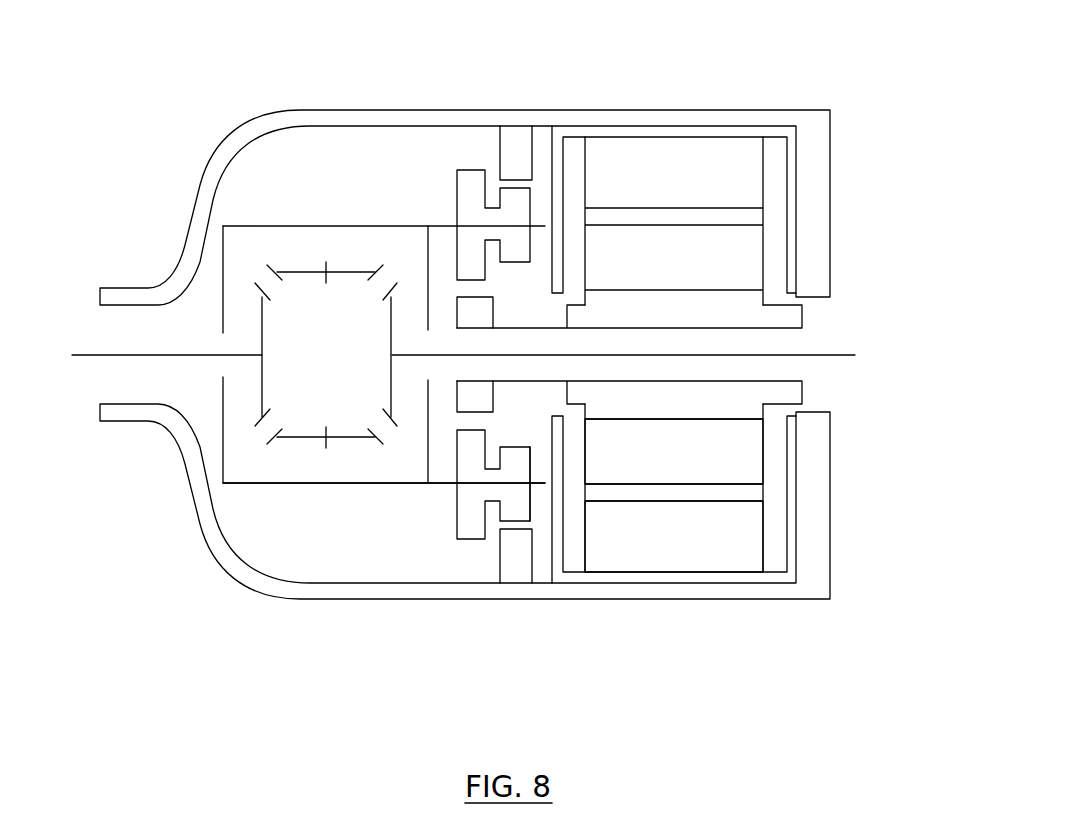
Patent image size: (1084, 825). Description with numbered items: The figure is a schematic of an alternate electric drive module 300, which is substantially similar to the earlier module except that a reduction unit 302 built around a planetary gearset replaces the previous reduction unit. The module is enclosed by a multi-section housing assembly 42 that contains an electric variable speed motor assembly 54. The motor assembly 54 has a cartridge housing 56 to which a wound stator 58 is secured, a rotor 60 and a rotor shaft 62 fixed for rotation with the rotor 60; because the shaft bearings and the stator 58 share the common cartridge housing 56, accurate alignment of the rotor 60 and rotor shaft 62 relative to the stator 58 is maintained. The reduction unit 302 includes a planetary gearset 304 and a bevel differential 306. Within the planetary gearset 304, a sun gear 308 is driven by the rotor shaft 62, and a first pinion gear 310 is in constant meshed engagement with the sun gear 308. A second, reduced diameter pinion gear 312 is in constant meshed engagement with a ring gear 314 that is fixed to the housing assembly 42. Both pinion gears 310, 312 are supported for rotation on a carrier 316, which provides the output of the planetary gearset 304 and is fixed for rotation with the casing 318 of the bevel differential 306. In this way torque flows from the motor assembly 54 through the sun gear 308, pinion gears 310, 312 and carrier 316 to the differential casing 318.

The electric drive module 300 is at (827, 76).
The reduction unit 302 is at (292, 148).
The planetary gearset 304 is at (462, 164).
The bevel differential 306 is at (338, 350).
The sun gear 308 is at (479, 401).
The first pinion gear 310 is at (473, 520).
The second pinion gear 312 is at (523, 510).
The ring gear 314 is at (508, 572).
The carrier 316 is at (471, 223).
The casing 318 is at (292, 485).
The housing assembly 42 is at (310, 592).
The motor assembly 54 is at (674, 316).
The cartridge housing 56 is at (611, 130).
The wound stator 58 is at (691, 548).
The rotor 60 is at (691, 462).
The rotor shaft 62 is at (798, 314).